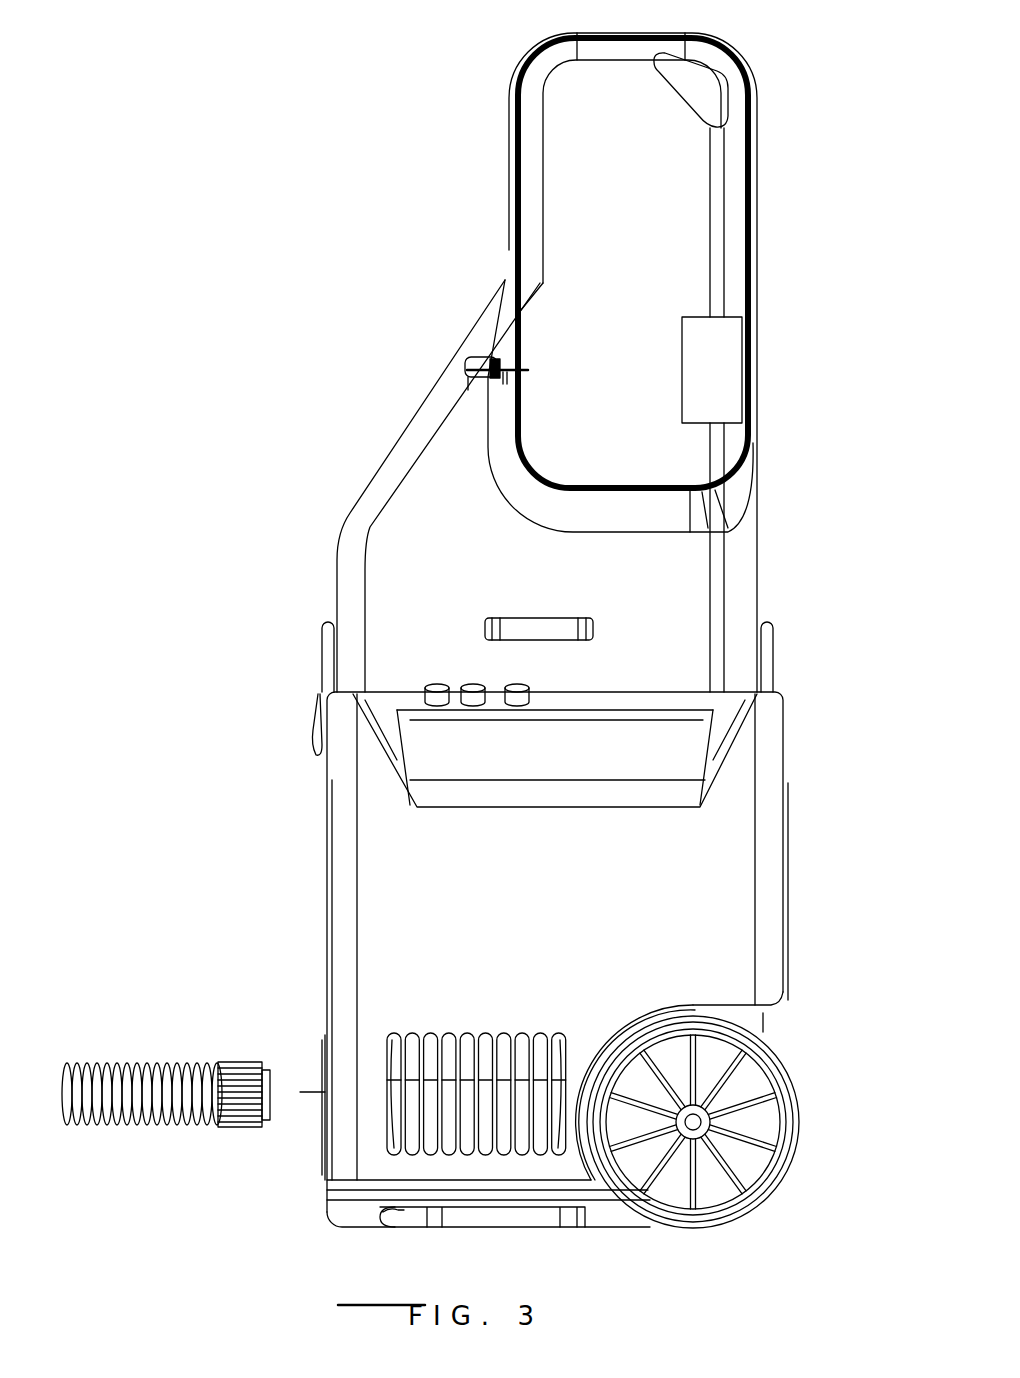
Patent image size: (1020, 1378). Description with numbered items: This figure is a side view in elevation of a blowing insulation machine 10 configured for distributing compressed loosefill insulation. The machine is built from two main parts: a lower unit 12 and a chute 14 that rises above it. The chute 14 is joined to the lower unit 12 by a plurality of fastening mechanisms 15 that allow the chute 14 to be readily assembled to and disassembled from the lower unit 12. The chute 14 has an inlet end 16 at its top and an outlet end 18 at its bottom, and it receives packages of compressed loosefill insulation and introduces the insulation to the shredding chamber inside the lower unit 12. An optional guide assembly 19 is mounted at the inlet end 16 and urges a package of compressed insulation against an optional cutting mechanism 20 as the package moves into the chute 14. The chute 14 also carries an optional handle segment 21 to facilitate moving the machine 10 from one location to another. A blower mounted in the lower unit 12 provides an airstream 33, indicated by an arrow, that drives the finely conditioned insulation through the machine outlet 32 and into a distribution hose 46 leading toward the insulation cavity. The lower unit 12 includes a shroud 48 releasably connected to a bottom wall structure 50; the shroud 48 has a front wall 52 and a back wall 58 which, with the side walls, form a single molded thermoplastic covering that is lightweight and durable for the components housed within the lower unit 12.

The blowing insulation machine 10 is at (280, 135).
The lower unit 12 is at (323, 826).
The chute 14 is at (508, 178).
The fastening mechanisms 15 is at (322, 652).
The inlet end 16 is at (645, 183).
The outlet end 18 is at (645, 688).
The guide assembly 19 is at (745, 355).
The cutting mechanism 20 is at (478, 366).
The handle segment 21 is at (737, 100).
The machine outlet 32 is at (323, 1102).
The airstream 33 is at (288, 1092).
The distribution hose 46 is at (122, 1127).
The shroud 48 is at (786, 732).
The bottom wall structure 50 is at (373, 1228).
The front wall 52 is at (322, 935).
The back wall 58 is at (788, 914).